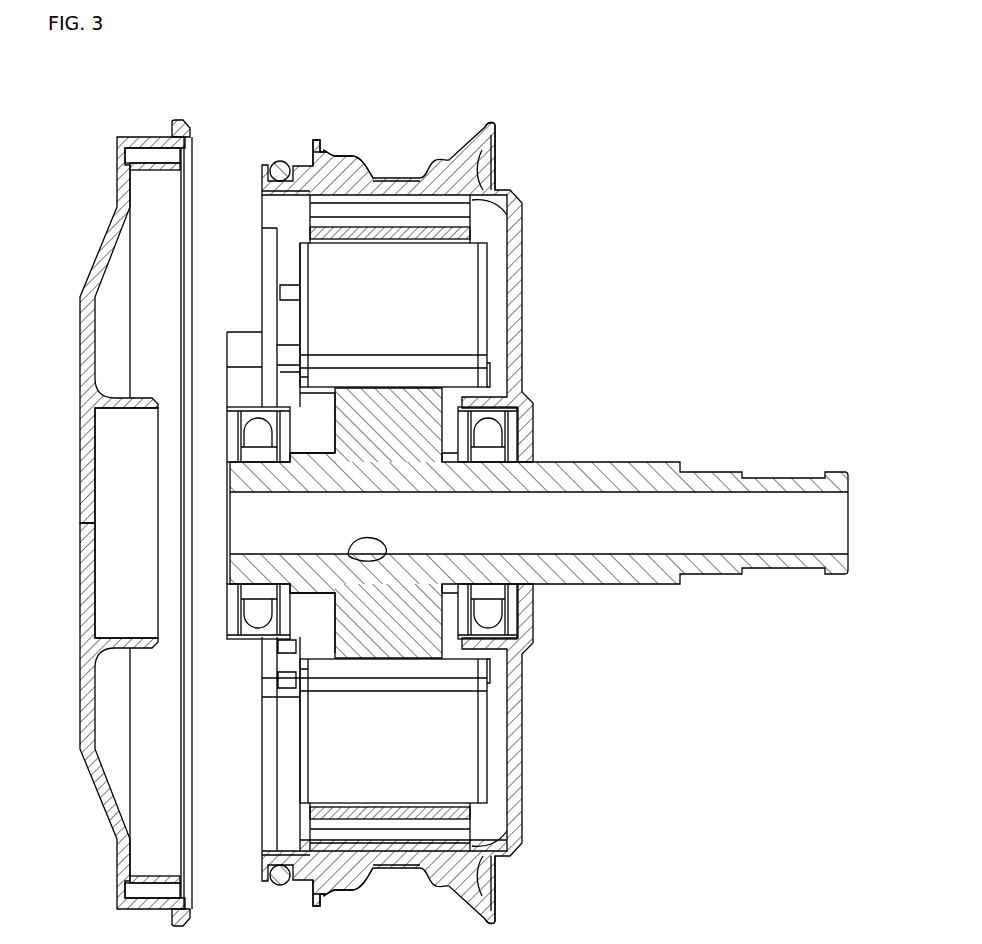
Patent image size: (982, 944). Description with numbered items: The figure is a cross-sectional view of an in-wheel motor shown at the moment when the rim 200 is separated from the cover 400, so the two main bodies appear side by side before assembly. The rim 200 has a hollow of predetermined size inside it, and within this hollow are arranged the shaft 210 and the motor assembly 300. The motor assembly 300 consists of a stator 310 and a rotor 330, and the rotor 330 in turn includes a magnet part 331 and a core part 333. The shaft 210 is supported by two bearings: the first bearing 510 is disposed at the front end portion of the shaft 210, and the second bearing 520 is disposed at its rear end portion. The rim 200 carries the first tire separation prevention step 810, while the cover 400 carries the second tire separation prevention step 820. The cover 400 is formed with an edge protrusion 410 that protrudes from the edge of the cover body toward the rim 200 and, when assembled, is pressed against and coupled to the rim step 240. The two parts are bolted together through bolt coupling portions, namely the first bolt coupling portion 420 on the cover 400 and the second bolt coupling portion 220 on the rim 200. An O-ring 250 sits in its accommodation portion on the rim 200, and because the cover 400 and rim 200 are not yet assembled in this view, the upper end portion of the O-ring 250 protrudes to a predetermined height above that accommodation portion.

The rim 200 is at (455, 155).
The shaft 210 is at (612, 470).
The second bolt coupling portion 220 is at (338, 154).
The rim step 240 is at (317, 140).
The O-ring 250 is at (277, 163).
The motor assembly 300 is at (507, 520).
The stator 310 is at (450, 278).
The rotor 330 is at (482, 520).
The magnet part 331 is at (455, 234).
The core part 333 is at (475, 212).
The cover 400 is at (115, 224).
The edge protrusion 410 is at (155, 163).
The first bolt coupling portion 420 is at (123, 152).
The first bearing 510 is at (263, 605).
The second bearing 520 is at (487, 612).
The first tire separation prevention step 810 is at (485, 122).
The second tire separation prevention step 820 is at (178, 122).